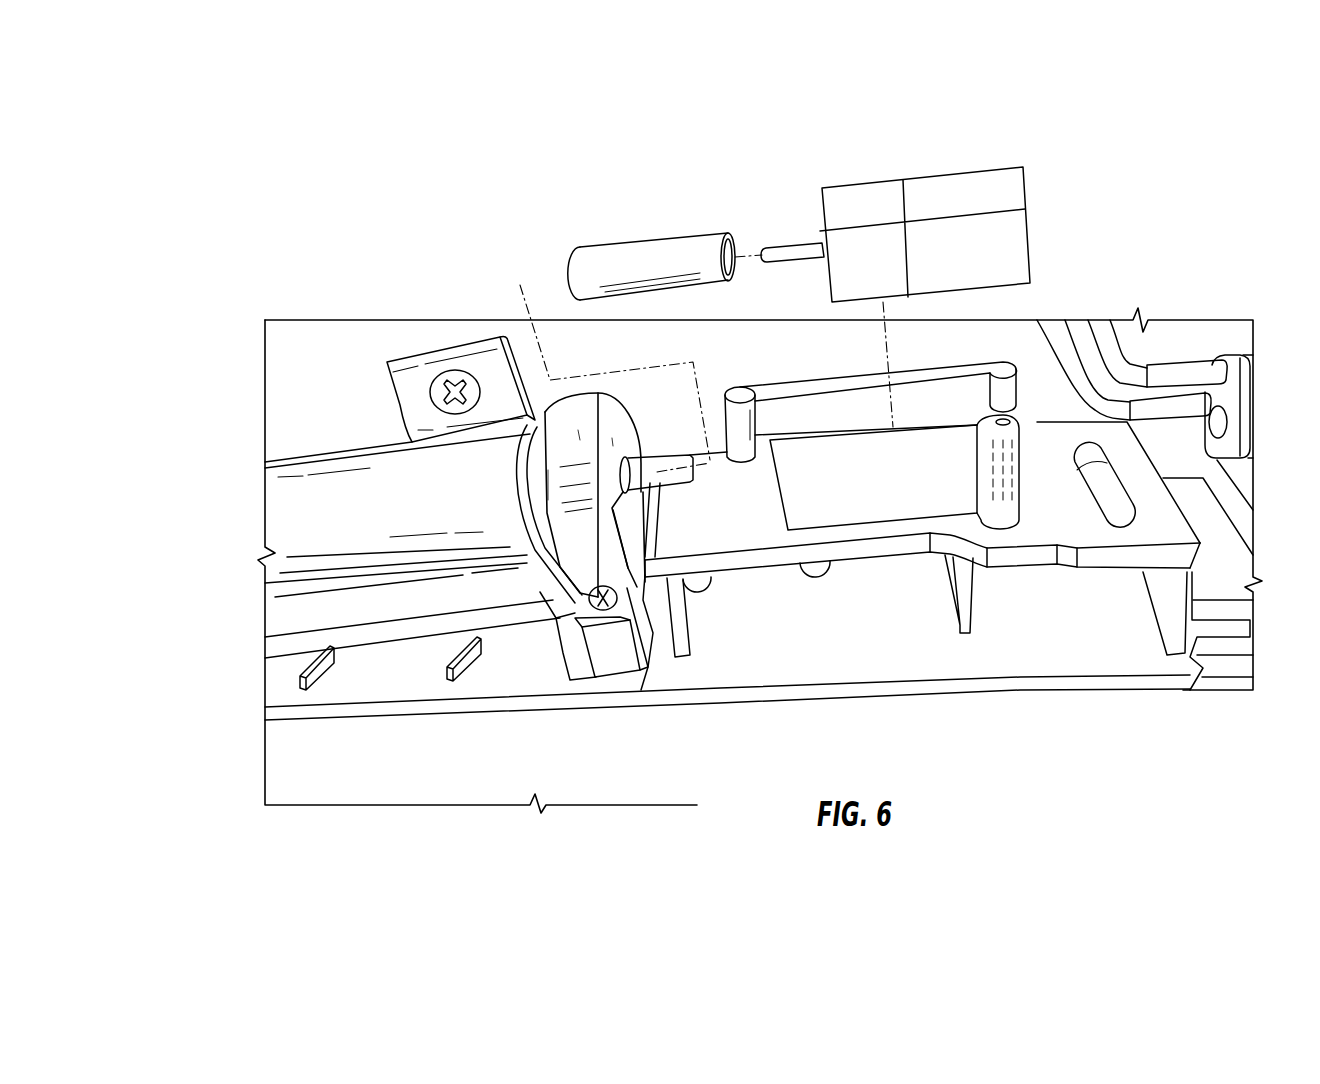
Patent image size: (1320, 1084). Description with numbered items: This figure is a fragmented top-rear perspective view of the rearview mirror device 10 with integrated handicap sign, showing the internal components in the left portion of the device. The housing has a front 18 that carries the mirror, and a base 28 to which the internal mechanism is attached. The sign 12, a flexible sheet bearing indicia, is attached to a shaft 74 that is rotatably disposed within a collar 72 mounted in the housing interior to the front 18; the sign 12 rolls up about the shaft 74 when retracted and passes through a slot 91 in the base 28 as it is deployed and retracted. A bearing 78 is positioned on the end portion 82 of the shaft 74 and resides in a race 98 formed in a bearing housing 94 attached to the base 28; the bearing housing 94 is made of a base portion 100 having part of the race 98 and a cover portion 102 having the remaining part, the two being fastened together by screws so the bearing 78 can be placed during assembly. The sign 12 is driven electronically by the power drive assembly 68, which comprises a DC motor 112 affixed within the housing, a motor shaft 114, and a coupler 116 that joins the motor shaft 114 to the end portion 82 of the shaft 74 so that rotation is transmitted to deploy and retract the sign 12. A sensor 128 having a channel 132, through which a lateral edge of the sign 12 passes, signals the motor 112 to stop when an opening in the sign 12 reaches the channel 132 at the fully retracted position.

The device 10 is at (345, 190).
The sign 12 is at (615, 775).
The front 18 is at (307, 402).
The base 28 is at (1118, 692).
The power drive assembly 68 is at (812, 250).
The collar 72 is at (357, 510).
The shaft 74 is at (645, 482).
The bearing 78 is at (612, 440).
The end portion 82 is at (677, 480).
The slot 91 is at (407, 652).
The bearing housing 94 is at (583, 532).
The race 98 is at (578, 435).
The base portion 100 is at (623, 663).
The cover portion 102 is at (599, 395).
The DC motor 112 is at (888, 185).
The motor shaft 114 is at (786, 245).
The coupler 116 is at (677, 240).
The sensor 128 is at (556, 627).
The channel 132 is at (548, 632).